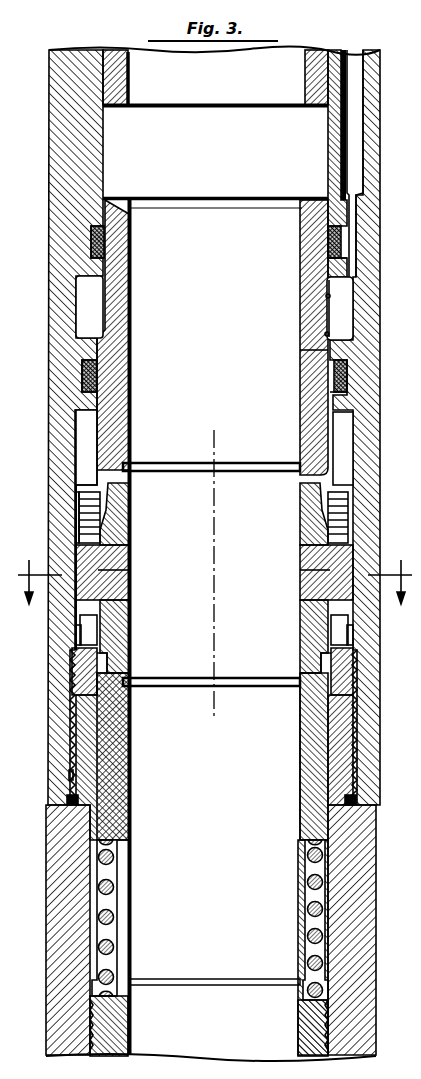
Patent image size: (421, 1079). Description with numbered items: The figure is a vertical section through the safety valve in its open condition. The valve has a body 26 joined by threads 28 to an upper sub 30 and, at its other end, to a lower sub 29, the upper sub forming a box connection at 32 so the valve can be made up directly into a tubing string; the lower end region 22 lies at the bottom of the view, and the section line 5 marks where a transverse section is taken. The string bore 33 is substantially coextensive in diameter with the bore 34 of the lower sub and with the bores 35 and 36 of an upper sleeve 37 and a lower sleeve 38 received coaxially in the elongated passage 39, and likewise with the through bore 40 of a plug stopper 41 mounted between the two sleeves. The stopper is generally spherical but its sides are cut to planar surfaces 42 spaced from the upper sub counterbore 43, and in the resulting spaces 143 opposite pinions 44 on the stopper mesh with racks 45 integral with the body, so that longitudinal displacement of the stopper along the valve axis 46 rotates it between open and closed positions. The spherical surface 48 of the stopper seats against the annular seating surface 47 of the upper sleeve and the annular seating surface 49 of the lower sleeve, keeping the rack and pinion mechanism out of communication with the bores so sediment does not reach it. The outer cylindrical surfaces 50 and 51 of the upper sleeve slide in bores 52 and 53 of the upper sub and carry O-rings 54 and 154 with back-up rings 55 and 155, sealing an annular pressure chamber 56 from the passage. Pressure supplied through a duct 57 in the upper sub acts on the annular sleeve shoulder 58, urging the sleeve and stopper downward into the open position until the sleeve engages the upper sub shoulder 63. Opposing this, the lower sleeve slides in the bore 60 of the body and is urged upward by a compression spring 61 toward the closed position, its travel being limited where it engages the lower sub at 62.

The section line 5- 5 is at (215, 573).
The threaded connection 22 is at (90, 1053).
The body 26 is at (52, 1000).
The threads 28 is at (70, 762).
The lower sub 29 is at (129, 1022).
The upper sub 30 is at (57, 386).
The pin and box connection 32 is at (322, 78).
The string bore 33 is at (131, 84).
The bore of the lower sub 34 is at (297, 1042).
The bore of the upper sleeve 35 is at (131, 268).
The bore of the lower sleeve 36 is at (131, 812).
The upper sleeve 37 is at (121, 290).
The lower sleeve 38 is at (131, 750).
The elongated passage 39 is at (215, 569).
The through bore 40 is at (131, 511).
The plug stopper 41 is at (131, 617).
The planar surfaces 42 is at (131, 493).
The upper sub counterbore 43 is at (76, 432).
The pinions 44 is at (131, 560).
The racks 45 is at (84, 518).
The valve axis 46 is at (214, 549).
The annular seating surface 47 is at (90, 509).
The spherical surface 48 is at (128, 463).
The annular seating surface 49 is at (131, 668).
The outer cylindrical surface 50 is at (327, 296).
The outer cylindrical surface 51 is at (333, 432).
The bore 52 is at (326, 219).
The bore 53 is at (330, 351).
The O-ring 54 is at (330, 241).
The back-up ring 55 is at (335, 259).
The annular pressure chamber 56 is at (339, 308).
The duct 57 is at (365, 126).
The annular sleeve shoulder 58 is at (326, 334).
The bore 60 is at (327, 780).
The compression spring 61 is at (309, 878).
The lower sub engagement point 62 is at (308, 979).
The upper sub shoulder 63 is at (346, 286).
The spaces 143 is at (75, 484).
The O-ring 154 is at (333, 373).
The back-up ring 155 is at (333, 391).